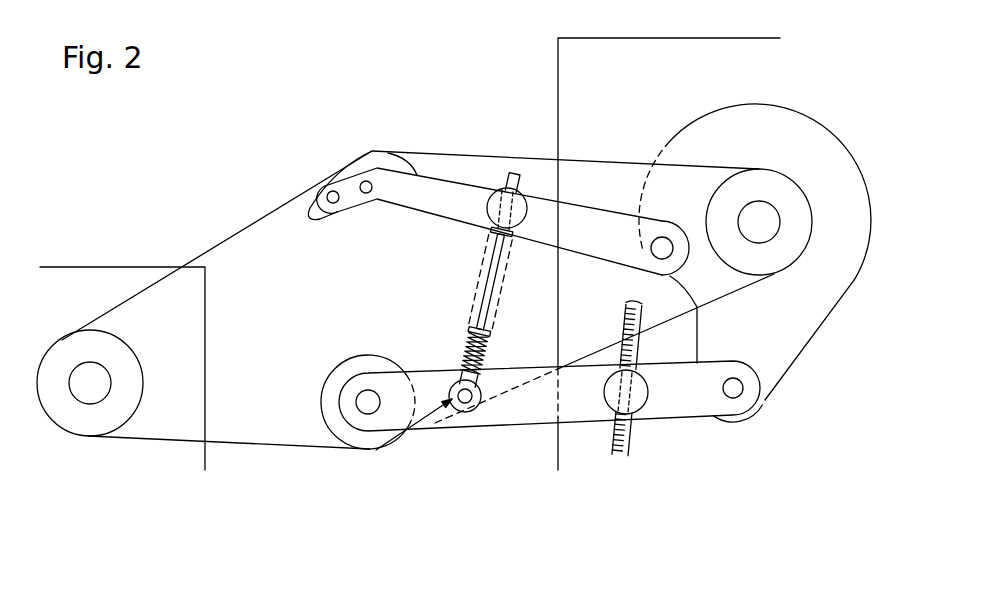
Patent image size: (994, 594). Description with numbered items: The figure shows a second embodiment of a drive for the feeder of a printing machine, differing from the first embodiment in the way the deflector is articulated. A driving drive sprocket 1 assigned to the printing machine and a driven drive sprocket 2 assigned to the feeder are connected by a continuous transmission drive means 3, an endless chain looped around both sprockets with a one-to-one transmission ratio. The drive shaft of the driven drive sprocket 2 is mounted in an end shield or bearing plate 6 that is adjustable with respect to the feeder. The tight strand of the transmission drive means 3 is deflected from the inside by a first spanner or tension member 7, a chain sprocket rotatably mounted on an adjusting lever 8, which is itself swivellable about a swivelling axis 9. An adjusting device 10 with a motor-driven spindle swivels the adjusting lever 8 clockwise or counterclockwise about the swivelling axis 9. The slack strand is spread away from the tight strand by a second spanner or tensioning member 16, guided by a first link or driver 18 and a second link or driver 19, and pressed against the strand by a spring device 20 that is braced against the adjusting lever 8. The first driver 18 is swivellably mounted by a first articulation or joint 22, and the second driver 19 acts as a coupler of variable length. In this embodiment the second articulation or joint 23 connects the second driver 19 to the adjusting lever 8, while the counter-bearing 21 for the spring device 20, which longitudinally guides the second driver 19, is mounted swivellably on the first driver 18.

The driving drive sprocket 1 is at (88, 430).
The driven drive sprocket 2 is at (793, 207).
The transmission drive means 3 is at (246, 447).
The end shield or bearing plate 6 is at (806, 341).
The first spanner or tension member 7 is at (355, 437).
The adjusting lever 8 is at (493, 418).
The swivelling axis 9 is at (740, 388).
The adjusting device 10 is at (624, 458).
The second spanner or tensioning member 16 is at (350, 158).
The first link or driver 18 is at (573, 217).
The second link or driver 19 is at (485, 262).
The spring device 20 is at (468, 330).
The counter-bearing 21 is at (493, 188).
The first articulation or joint 22 is at (668, 228).
The second articulation or joint 23 is at (418, 428).